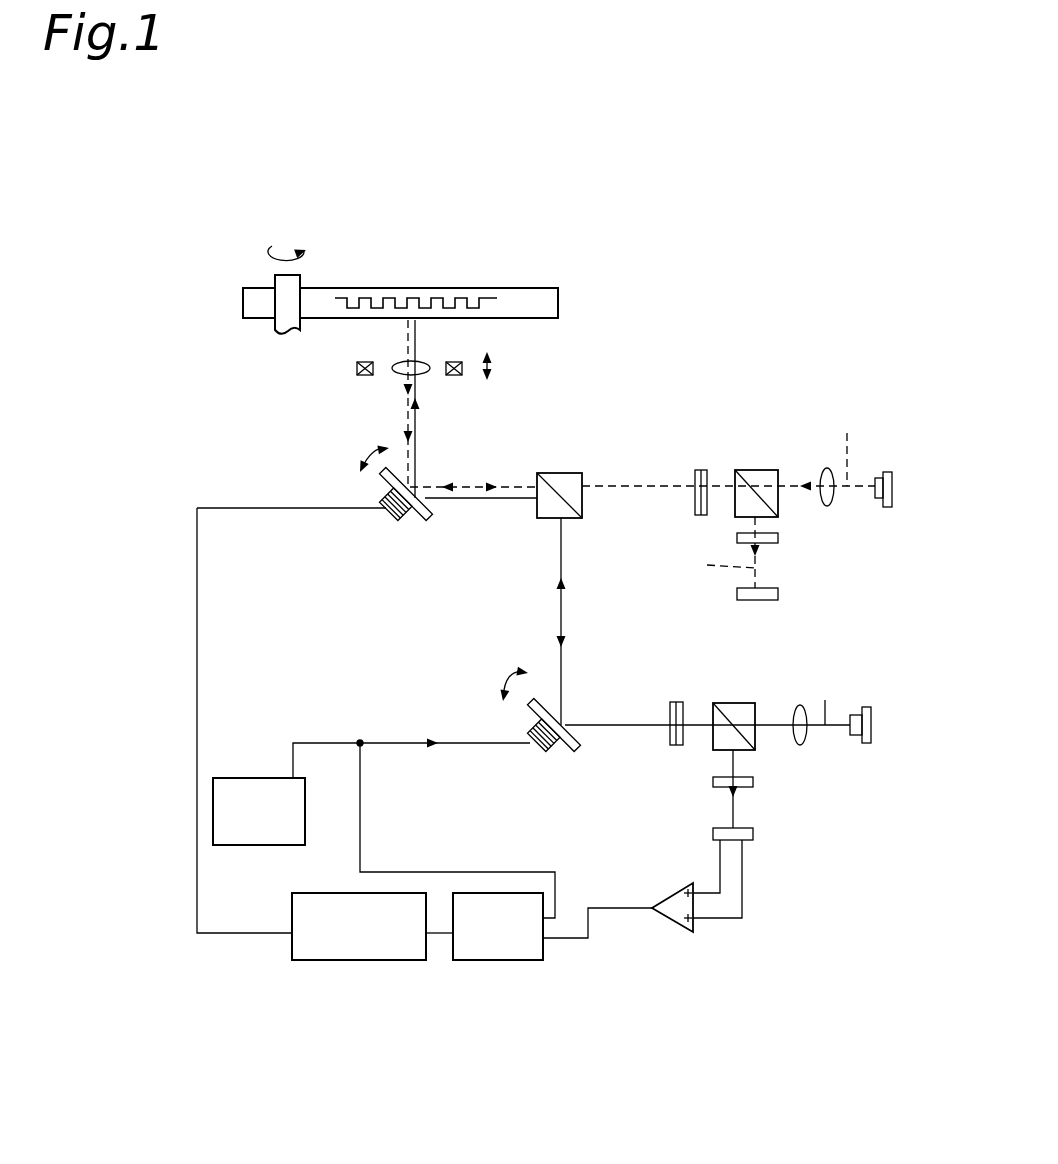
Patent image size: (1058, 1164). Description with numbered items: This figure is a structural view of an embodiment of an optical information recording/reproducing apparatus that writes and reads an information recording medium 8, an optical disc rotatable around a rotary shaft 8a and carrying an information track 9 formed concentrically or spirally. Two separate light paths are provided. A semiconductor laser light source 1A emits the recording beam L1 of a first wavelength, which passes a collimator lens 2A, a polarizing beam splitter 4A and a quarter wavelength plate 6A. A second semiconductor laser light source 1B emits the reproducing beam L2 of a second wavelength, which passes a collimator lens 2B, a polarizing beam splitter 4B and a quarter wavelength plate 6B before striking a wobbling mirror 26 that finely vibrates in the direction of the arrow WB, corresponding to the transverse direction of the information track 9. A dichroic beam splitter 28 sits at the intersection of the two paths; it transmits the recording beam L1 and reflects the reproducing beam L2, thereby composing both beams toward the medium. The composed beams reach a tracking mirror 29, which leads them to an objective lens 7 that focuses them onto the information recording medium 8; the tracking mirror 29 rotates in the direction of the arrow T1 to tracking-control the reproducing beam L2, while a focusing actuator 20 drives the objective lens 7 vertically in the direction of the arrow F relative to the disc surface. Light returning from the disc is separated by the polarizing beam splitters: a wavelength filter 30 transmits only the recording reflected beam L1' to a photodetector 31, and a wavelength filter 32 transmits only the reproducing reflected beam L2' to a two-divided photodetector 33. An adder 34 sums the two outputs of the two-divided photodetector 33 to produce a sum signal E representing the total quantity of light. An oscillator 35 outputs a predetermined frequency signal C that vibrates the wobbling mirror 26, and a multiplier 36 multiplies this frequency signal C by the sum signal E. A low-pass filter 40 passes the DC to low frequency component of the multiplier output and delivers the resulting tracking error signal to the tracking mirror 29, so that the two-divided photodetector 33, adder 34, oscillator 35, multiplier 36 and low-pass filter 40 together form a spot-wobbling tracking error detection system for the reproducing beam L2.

The information recording medium 8 is at (528, 293).
The rotary shaft 8a is at (300, 283).
The information track 9 is at (416, 297).
The objective lens 7 is at (400, 376).
The focusing actuator 20 is at (462, 373).
The focusing direction arrow F is at (489, 366).
The tracking mirror rotation direction arrow T1 is at (364, 455).
The tracking mirror 29 is at (425, 518).
The dichroic beam splitter 28 is at (560, 473).
The quarter wavelength plate 6A is at (700, 470).
The polarizing beam splitter 4A is at (756, 470).
The collimator lens 2A is at (827, 468).
The recording beam L1 is at (856, 449).
The light source 1A is at (876, 480).
The wavelength filter 30 is at (778, 538).
The photodetector 31 is at (778, 593).
The recording reflected beam L1' is at (717, 565).
The quarter wavelength plate 6B is at (676, 702).
The polarizing beam splitter 4B is at (728, 703).
The collimator lens 2B is at (800, 705).
The reproducing beam L2 is at (839, 675).
The light source 1B is at (853, 710).
The wavelength filter 32 is at (755, 782).
The two-divided photodetector 33 is at (755, 834).
The reproducing reflected beam L2' is at (694, 805).
The wobbling direction arrow WB is at (506, 676).
The wobbling mirror 26 is at (576, 751).
The oscillator 35 is at (260, 778).
The frequency signal C is at (422, 871).
The low-pass filter 40 is at (405, 961).
The multiplier 36 is at (500, 961).
The sum signal E is at (573, 940).
The adder 34 is at (657, 905).